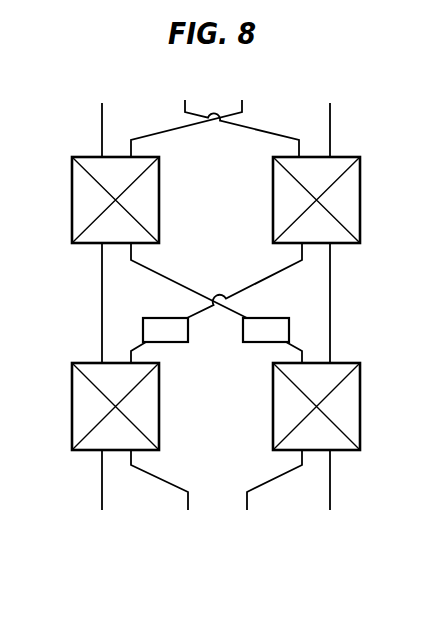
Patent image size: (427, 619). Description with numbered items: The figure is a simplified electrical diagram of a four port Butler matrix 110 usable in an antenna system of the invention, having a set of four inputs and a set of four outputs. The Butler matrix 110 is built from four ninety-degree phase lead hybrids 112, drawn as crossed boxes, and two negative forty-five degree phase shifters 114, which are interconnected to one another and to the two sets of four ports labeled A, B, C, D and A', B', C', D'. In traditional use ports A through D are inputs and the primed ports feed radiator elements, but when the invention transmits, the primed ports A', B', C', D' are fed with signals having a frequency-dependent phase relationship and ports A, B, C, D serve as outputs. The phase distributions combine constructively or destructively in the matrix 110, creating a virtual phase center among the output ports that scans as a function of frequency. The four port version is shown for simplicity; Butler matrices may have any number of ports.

The four port Butler matrix 110 is at (104, 554).
The 90° phase lead hybrid 112 is at (80, 191).
The negative 45° phase shifter 114 is at (161, 318).